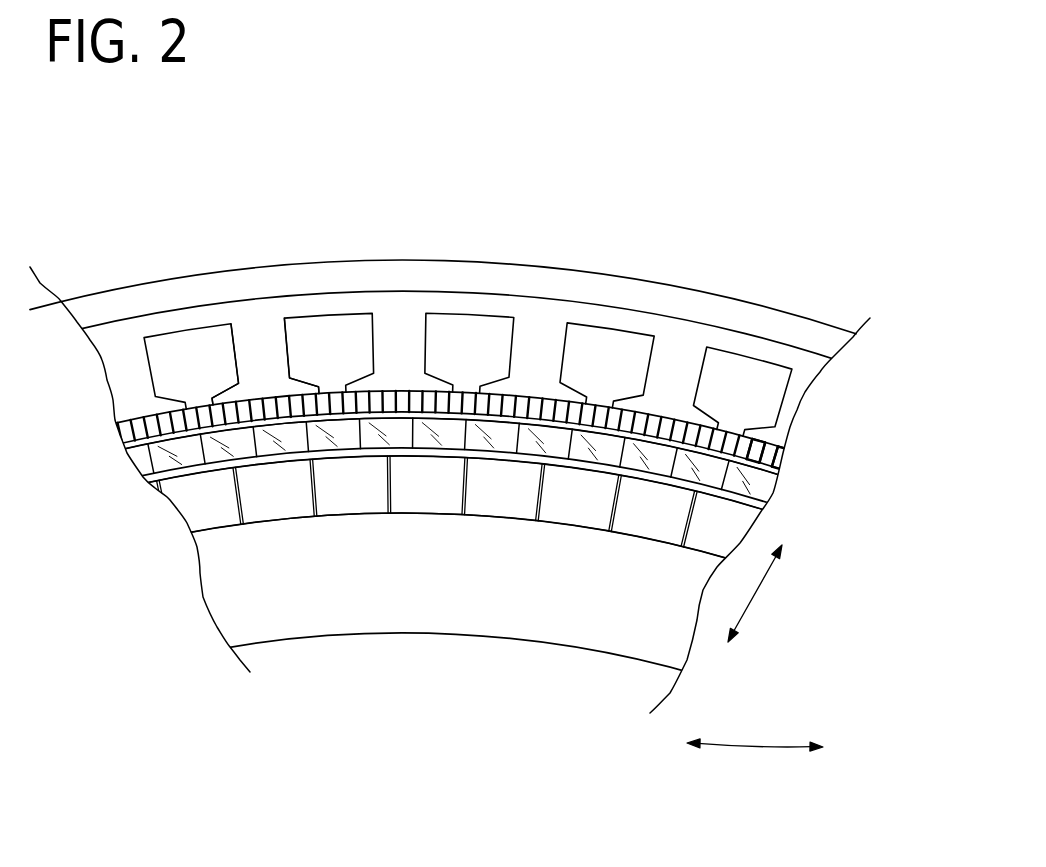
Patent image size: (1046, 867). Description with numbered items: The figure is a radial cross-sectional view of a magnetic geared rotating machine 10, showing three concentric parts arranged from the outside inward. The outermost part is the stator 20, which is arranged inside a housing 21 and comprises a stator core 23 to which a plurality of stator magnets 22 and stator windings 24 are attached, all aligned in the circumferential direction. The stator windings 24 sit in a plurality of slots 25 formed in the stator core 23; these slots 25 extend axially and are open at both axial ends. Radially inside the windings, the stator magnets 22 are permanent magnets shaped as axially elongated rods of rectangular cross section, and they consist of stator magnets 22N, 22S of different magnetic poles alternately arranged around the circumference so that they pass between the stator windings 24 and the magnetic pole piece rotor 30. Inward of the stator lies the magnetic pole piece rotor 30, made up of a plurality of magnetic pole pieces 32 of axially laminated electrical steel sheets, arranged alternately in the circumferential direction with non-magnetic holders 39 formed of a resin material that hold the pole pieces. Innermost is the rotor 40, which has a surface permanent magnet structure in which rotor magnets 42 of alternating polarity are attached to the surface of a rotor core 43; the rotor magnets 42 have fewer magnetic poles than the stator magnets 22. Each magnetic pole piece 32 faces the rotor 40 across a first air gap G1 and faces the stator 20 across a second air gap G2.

The magnetic geared rotating machine 10 is at (697, 146).
The stator 20 is at (507, 152).
The housing 21 is at (702, 313).
The stator magnet 22 is at (400, 388).
The stator magnet (N pole) 22N is at (760, 448).
The stator magnet (S pole) 22S is at (777, 447).
The stator core 23 is at (262, 327).
The stator winding 24 is at (332, 340).
The slot 25 is at (598, 333).
The magnetic pole piece rotor 30 is at (851, 472).
The magnetic pole piece 32 is at (760, 488).
The non-magnetic holder 39 is at (753, 470).
The rotor 40 is at (104, 580).
The rotor magnet 42 is at (208, 512).
The rotor core 43 is at (230, 603).
The first air gap G1 is at (187, 477).
The second air gap G2 is at (127, 448).